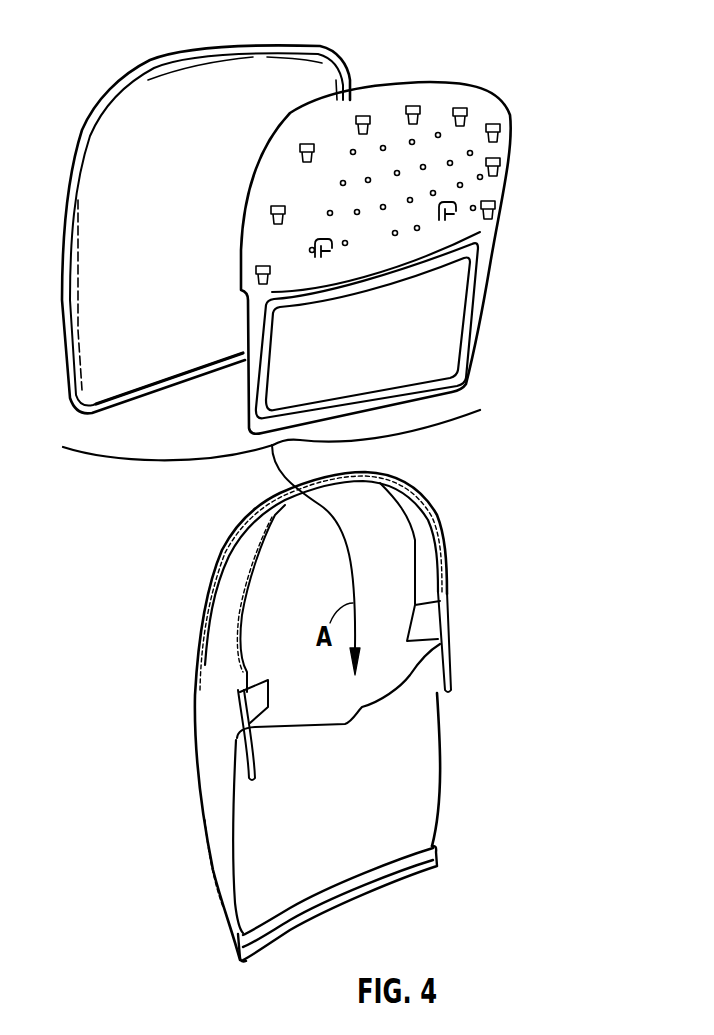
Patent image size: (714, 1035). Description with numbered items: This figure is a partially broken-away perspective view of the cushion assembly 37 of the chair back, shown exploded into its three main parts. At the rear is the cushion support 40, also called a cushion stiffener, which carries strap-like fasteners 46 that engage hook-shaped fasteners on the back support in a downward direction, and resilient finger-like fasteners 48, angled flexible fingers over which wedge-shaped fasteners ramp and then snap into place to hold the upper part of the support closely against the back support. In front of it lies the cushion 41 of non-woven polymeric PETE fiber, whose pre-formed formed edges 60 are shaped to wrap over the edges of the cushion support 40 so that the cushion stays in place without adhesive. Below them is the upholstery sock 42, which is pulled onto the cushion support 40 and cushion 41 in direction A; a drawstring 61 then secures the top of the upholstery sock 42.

The cushion assembly 37 is at (533, 73).
The cushion support 40 is at (495, 82).
The cushion 41 is at (82, 133).
The upholstery sock 42 is at (452, 773).
The strap-like fasteners 46 is at (460, 106).
The resilient finger-like fasteners 48 is at (333, 250).
The formed edges 60 is at (195, 72).
The drawstring 61 is at (247, 763).